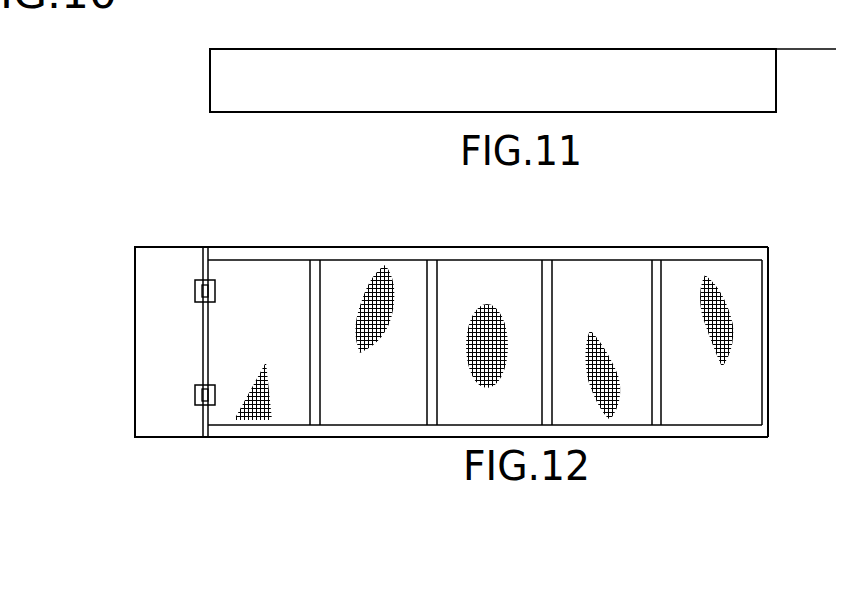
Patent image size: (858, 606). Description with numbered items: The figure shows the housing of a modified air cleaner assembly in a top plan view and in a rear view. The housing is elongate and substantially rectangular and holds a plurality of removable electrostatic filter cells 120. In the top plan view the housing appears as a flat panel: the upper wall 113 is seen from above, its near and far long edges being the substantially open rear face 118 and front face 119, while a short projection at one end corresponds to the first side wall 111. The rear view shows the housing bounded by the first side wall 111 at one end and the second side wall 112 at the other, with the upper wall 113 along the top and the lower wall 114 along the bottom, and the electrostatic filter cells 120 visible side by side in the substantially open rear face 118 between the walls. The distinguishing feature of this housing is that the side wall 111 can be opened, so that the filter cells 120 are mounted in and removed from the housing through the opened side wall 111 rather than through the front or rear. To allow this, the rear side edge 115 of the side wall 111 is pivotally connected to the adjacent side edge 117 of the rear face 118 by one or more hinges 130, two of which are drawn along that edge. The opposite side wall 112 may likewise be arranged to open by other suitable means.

In FIG. 11, the first side wall 111 is at (815, 51).
In FIG. 12, the first side wall 111 is at (157, 343).
In FIG. 12, the second side wall 112 is at (769, 333).
In FIG. 11, the upper wall 113 is at (496, 89).
In FIG. 12, the upper wall 113 is at (718, 249).
In FIG. 12, the lower wall 114 is at (700, 440).
In FIG. 12, the rear side edge 115 is at (203, 325).
In FIG. 12, the side edge of the rear face 117 is at (206, 350).
In FIG. 11, the rear face 118 is at (290, 113).
In FIG. 11, the front face 119 is at (318, 48).
In FIG. 12, the electrostatic filter cells 120 is at (356, 404).
In FIG. 12, the hinges 130 is at (196, 291).